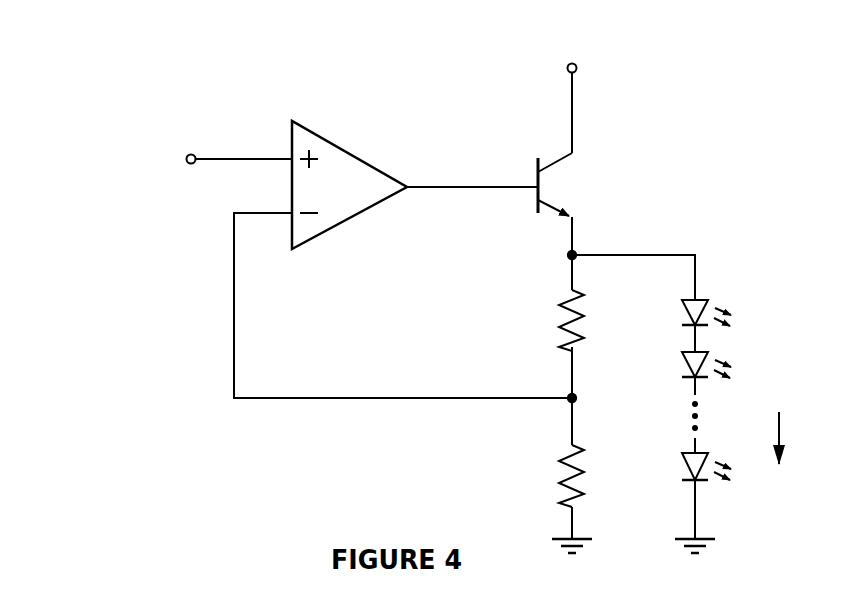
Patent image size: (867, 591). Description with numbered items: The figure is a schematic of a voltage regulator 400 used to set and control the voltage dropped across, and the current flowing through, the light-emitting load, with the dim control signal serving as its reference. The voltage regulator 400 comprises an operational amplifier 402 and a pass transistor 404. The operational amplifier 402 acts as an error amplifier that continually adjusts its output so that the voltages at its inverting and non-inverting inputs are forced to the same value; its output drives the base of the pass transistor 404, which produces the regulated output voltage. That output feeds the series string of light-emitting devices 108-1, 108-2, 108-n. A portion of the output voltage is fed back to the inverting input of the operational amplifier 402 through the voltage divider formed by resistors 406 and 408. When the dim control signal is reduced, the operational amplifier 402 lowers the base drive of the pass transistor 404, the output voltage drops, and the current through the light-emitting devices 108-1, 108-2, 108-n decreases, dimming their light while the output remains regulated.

The voltage regulator 400 is at (98, 321).
The operational amplifier 402 is at (357, 143).
The pass transistor 404 is at (524, 200).
The resistor 406 is at (548, 317).
The resistor 408 is at (550, 473).
The light-emitting device 108-1 is at (677, 326).
The light-emitting device 108-2 is at (677, 365).
The light-emitting device 108-n is at (677, 466).